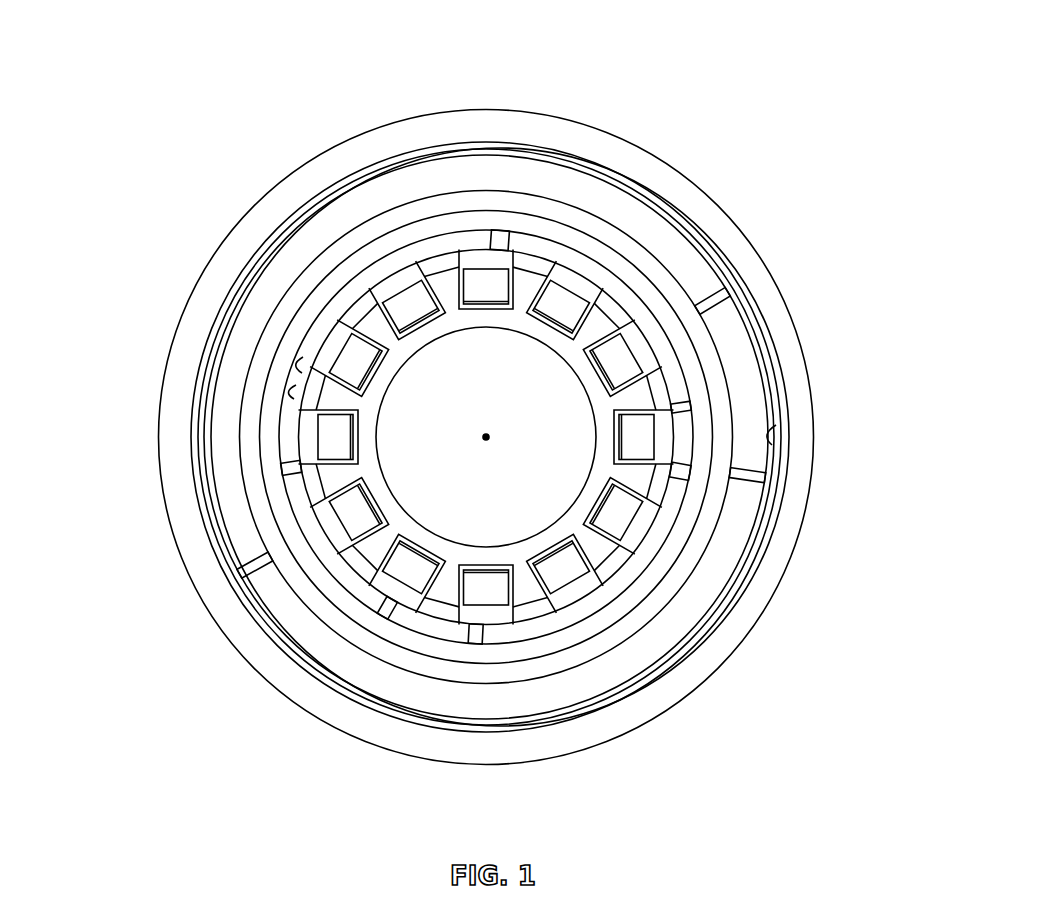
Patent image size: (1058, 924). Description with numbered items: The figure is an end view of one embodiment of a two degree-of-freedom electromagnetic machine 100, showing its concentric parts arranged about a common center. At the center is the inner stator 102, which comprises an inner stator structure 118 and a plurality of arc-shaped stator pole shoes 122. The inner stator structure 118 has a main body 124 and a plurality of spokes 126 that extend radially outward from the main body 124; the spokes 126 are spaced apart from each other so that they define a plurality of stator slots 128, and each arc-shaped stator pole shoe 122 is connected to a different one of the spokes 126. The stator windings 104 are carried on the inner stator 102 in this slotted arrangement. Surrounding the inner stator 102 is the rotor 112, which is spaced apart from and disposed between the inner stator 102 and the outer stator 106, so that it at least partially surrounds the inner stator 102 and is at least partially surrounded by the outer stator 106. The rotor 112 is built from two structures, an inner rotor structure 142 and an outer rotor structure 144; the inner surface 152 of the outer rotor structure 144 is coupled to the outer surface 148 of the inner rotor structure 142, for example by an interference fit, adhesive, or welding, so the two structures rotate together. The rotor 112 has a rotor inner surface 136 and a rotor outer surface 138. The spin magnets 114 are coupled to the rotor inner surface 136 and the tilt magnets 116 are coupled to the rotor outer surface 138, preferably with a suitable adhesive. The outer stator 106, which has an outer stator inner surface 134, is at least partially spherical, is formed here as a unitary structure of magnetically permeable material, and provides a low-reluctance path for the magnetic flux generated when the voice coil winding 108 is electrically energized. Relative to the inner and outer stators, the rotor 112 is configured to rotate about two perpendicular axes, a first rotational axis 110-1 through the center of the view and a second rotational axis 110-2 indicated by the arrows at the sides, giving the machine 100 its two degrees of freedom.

The two degree-of-freedom electromagnetic machine 100 is at (134, 52).
The inner stator 102 is at (425, 350).
The stator windings 104 is at (615, 315).
The outer stator 106 is at (803, 342).
The voice coil winding 108 is at (767, 380).
The first rotational axis 110-1 is at (487, 434).
The second rotational axis 110-2 is at (823, 367).
The rotor 112 is at (250, 527).
The spin magnets 114 is at (485, 252).
The tilt magnets 116 is at (392, 198).
The inner stator structure 118 is at (557, 340).
The arc-shaped stator pole shoes 122 is at (612, 290).
The main body 124 is at (365, 438).
The spokes 126 is at (375, 537).
The stator slots 128 is at (457, 242).
The outer stator inner surface 134 is at (770, 440).
The rotor inner surface 136 is at (294, 392).
The rotor outer surface 138 is at (258, 547).
The inner rotor structure 142 is at (327, 290).
The outer rotor structure 144 is at (302, 357).
The outer surface of inner rotor structure 148 is at (365, 243).
The inner surface of outer rotor structure 152 is at (267, 343).